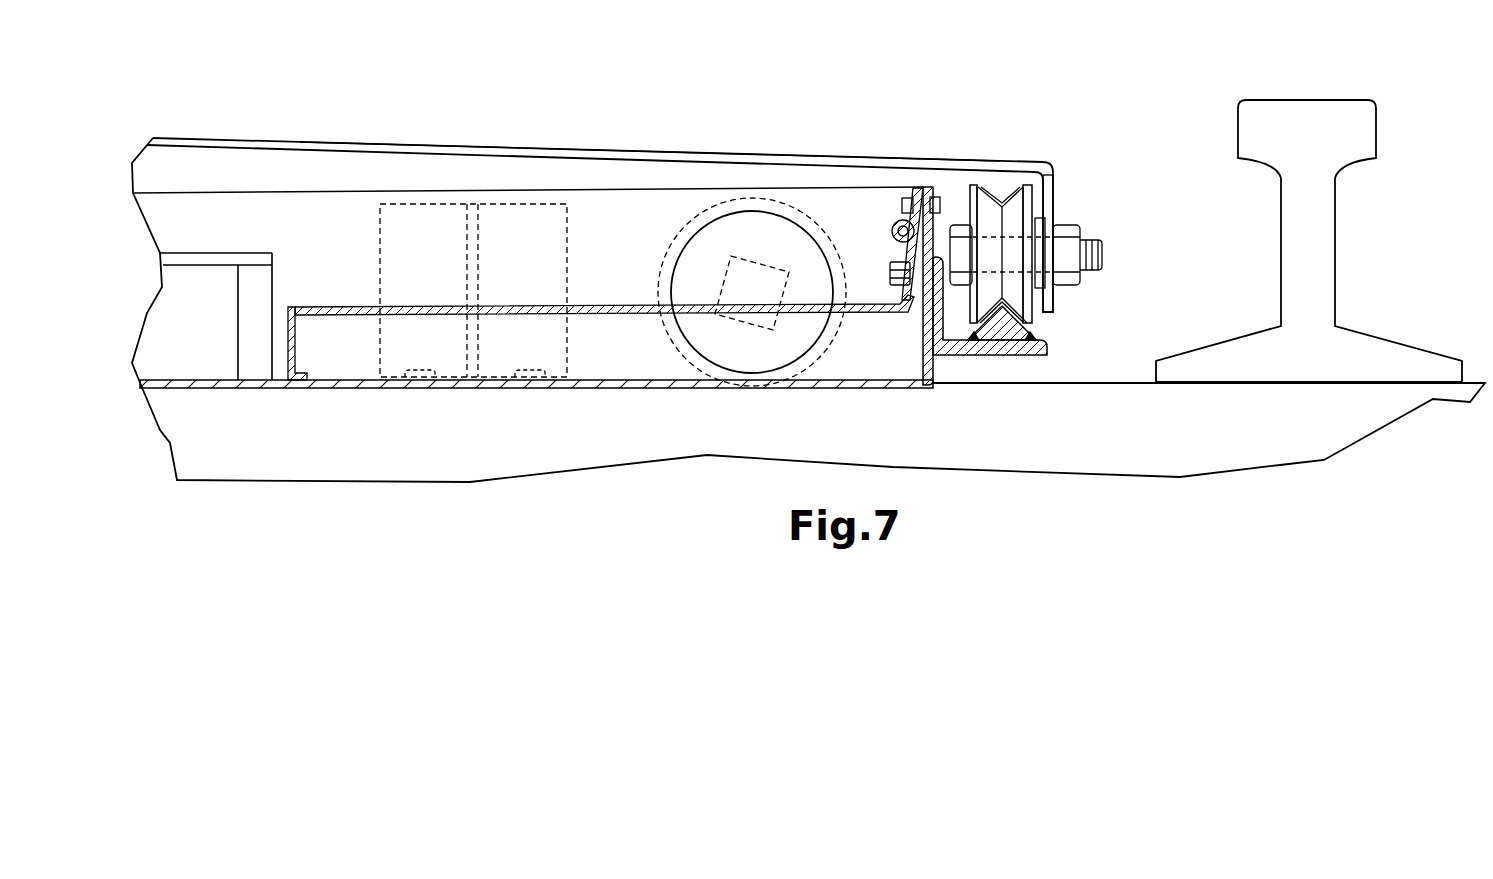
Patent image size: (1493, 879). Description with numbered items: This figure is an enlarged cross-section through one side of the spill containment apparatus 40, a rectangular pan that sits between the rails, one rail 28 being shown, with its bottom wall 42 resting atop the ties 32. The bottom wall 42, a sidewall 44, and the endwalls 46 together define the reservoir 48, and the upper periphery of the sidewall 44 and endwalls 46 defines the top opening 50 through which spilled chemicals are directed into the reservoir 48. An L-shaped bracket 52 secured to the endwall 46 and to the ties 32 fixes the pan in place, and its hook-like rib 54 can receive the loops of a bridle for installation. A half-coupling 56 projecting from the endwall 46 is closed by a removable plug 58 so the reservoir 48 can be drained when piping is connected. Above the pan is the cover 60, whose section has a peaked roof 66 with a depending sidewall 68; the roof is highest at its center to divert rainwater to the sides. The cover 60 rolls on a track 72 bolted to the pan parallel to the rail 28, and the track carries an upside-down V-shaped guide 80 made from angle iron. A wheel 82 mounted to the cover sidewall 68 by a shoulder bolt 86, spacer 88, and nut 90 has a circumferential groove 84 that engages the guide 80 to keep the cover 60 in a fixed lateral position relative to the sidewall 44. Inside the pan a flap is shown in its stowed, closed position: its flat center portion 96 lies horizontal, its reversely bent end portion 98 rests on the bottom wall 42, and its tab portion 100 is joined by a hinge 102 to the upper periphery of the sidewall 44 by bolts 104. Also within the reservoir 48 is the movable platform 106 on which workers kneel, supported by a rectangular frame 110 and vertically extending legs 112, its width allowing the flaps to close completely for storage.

The rail 28 is at (1263, 102).
The ties 32 is at (1268, 449).
The spill containment apparatus 40 is at (873, 68).
The bottom wall 42 is at (198, 373).
The sidewall 44 is at (925, 340).
The endwall 46 is at (352, 266).
The reservoir 48 is at (283, 210).
The top opening 50 is at (315, 192).
The L-shaped bracket 52 is at (545, 227).
The hook-like rib 54 is at (475, 290).
The NPT half-coupling 56 is at (720, 215).
The NPT plug 58 is at (708, 253).
The cover 60 is at (767, 140).
The peaked roof 66 is at (855, 167).
The sidewall 68 is at (1053, 193).
The track 72 is at (997, 352).
The guide 80 is at (1015, 330).
The wheel 82 is at (972, 207).
The circumferential groove 84 is at (1007, 187).
The shoulder bolt 86 is at (1102, 252).
The spacer 88 is at (1040, 223).
The nut 90 is at (1082, 230).
The flat center portion 96 is at (594, 310).
The reversely bent end portion 98 is at (294, 360).
The tab portion 100 is at (912, 305).
The hinge 102 is at (897, 220).
The bolt 104 is at (890, 270).
The movable platform 106 is at (190, 223).
The rectangular frame 110 is at (212, 257).
The leg 112 is at (250, 305).